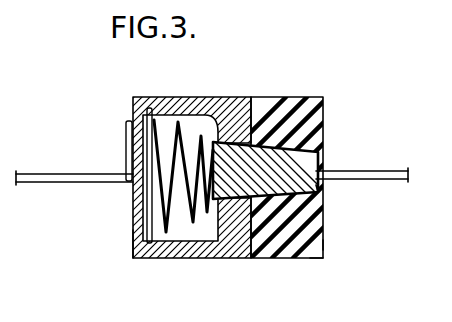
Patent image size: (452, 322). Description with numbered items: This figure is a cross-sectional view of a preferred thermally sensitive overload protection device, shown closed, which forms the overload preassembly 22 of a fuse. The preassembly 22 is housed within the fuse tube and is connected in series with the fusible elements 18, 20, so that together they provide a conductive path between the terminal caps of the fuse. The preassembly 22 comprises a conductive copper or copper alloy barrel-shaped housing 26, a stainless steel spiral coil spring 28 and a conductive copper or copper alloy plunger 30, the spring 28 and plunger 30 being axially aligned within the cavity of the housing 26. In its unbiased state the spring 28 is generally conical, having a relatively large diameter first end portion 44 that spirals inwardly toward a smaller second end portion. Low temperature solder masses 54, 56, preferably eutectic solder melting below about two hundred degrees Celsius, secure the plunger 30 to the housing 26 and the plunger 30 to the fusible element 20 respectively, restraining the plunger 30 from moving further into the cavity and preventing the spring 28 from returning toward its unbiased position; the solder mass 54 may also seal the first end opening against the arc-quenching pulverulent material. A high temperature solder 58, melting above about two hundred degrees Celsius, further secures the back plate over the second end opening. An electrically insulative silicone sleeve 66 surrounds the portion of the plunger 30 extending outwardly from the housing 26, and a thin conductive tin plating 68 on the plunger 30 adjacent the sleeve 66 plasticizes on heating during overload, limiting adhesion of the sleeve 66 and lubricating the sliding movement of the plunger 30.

The fusible element 18 is at (44, 173).
The fusible element 20 is at (380, 170).
The overload protection device or preassembly 22 is at (242, 93).
The barrel-shaped housing 26 is at (182, 96).
The spiral coil spring 28 is at (182, 218).
The plunger 30 is at (306, 130).
The first end portion 44 is at (150, 195).
The solder mass 54 is at (262, 200).
The solder mass 56 is at (316, 191).
The high temperature solder 58 is at (132, 240).
The silicone sleeve 66 is at (313, 244).
The tin plating 68 is at (322, 246).